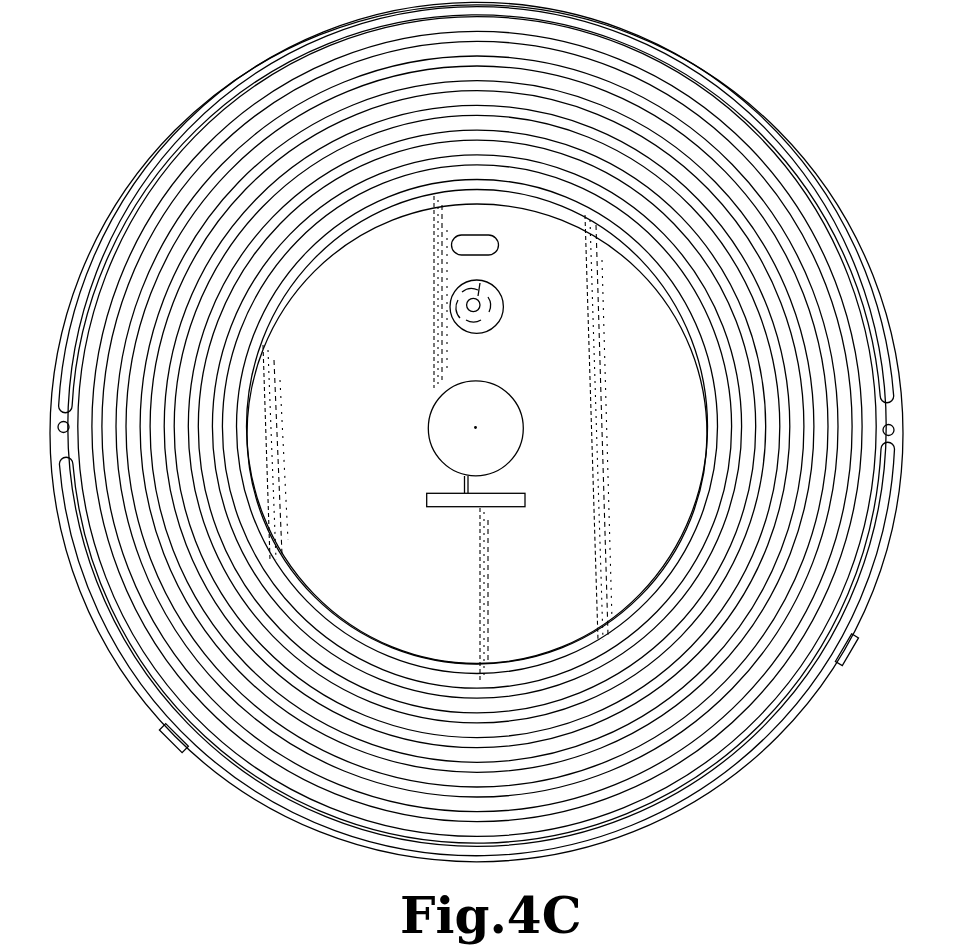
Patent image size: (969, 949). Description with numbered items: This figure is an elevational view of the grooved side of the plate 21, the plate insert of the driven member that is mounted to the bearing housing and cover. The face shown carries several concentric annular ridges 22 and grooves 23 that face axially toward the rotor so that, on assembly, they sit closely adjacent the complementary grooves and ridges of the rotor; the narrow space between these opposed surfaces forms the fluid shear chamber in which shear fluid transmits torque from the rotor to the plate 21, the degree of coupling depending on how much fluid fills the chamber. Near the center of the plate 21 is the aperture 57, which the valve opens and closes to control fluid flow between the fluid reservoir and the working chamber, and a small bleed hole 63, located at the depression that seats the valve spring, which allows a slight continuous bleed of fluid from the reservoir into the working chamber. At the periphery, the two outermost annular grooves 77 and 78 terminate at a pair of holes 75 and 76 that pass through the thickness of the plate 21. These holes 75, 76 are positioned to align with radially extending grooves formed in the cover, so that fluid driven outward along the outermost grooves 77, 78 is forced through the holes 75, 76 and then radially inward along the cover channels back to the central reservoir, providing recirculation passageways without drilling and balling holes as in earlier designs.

The plate 21 is at (868, 203).
The annular ridges 22 is at (752, 150).
The annular grooves 23 is at (790, 185).
The aperture 57 is at (488, 247).
The bleed hole 63 is at (481, 308).
The hole 75 is at (893, 432).
The hole 76 is at (62, 433).
The outermost annular groove 77 is at (888, 480).
The outermost annular groove 78 is at (263, 66).